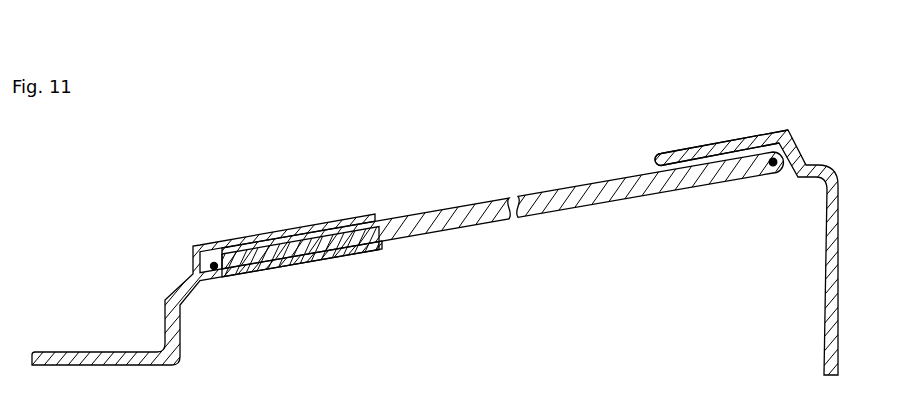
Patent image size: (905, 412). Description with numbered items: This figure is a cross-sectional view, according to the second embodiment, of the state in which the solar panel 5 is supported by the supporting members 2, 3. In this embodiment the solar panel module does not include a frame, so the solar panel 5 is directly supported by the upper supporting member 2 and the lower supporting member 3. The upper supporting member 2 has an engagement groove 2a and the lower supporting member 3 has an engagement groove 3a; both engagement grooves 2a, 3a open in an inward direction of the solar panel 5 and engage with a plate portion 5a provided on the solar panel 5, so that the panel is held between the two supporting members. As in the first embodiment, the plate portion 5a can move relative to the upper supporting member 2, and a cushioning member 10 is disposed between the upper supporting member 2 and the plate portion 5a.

The upper supporting member 2 is at (820, 124).
The engagement groove 2a is at (773, 166).
The lower supporting member 3 is at (88, 311).
The engagement groove 3a is at (214, 264).
The solar panel 5 is at (491, 200).
The plate portion 5a is at (463, 208).
The cushioning member 10 is at (718, 140).